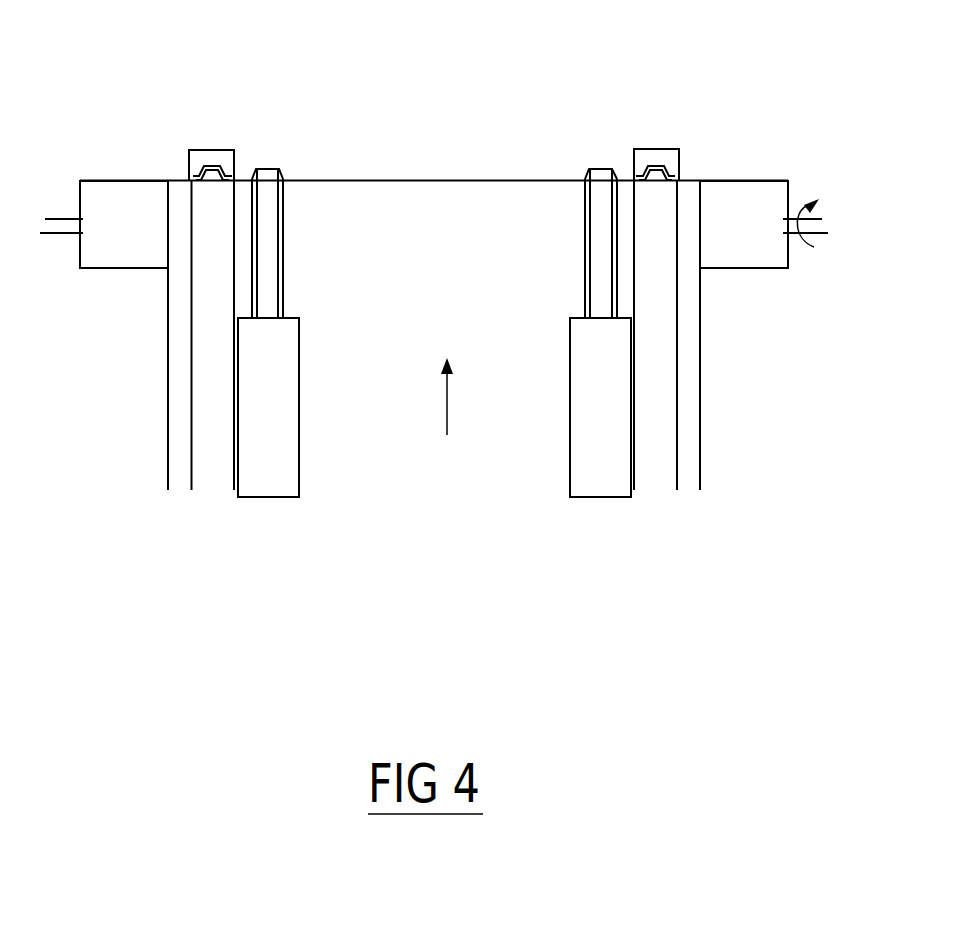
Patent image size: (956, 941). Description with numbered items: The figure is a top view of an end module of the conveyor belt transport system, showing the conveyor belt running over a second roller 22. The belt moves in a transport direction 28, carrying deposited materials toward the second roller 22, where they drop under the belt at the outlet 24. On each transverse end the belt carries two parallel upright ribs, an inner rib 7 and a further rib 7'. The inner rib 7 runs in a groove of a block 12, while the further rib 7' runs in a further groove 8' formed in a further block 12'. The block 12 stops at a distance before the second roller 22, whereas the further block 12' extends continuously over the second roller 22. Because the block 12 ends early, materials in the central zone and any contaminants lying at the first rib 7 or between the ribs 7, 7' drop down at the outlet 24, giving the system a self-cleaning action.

The inner upright rib 7 is at (434, 243).
The further upright rib 7' is at (460, 100).
The further groove 8' is at (408, 121).
The block 12 is at (434, 407).
The further block 12' is at (433, 335).
The second roller 22 is at (735, 215).
The outlet 24 is at (447, 149).
The transport direction 28 is at (466, 396).